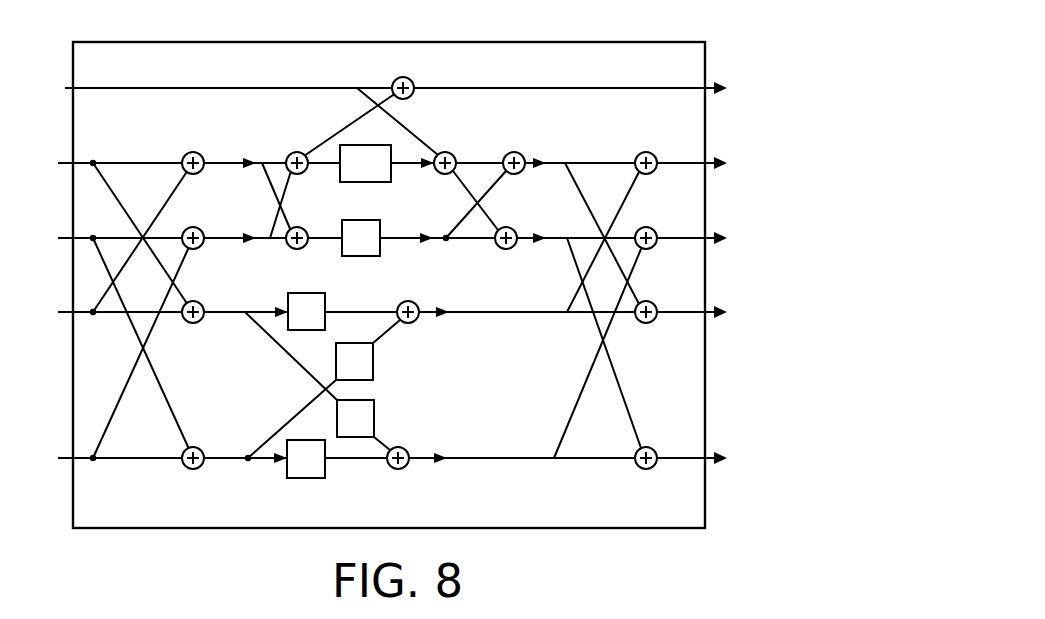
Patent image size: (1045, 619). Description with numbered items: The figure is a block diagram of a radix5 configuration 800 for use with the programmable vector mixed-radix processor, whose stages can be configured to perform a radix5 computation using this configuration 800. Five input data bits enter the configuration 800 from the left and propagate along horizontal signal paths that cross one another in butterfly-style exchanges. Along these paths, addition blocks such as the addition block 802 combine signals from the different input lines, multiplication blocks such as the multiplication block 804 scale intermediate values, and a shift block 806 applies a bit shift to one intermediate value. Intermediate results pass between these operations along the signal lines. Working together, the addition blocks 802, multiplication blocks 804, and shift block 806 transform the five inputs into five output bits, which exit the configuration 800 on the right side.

The radix5 configuration 800 is at (567, 44).
The addition block 802 is at (204, 180).
The multiplication block 804 is at (303, 478).
The shift block 806 is at (380, 183).